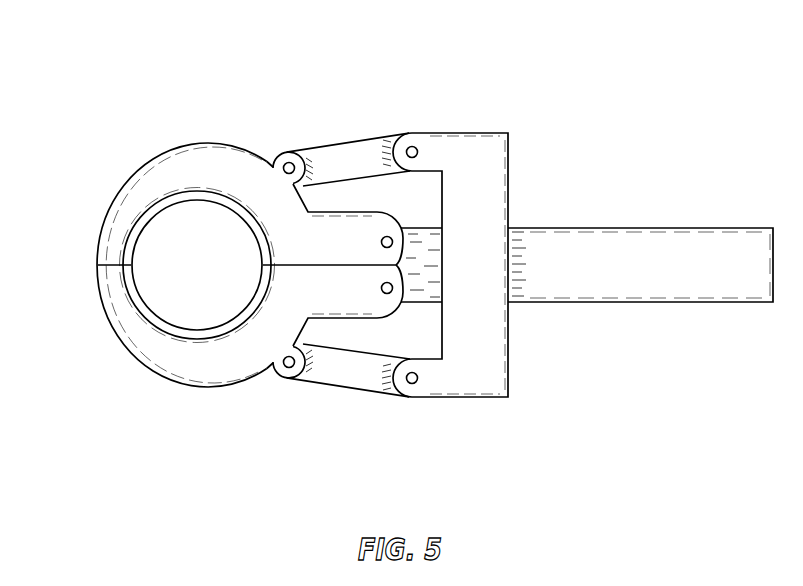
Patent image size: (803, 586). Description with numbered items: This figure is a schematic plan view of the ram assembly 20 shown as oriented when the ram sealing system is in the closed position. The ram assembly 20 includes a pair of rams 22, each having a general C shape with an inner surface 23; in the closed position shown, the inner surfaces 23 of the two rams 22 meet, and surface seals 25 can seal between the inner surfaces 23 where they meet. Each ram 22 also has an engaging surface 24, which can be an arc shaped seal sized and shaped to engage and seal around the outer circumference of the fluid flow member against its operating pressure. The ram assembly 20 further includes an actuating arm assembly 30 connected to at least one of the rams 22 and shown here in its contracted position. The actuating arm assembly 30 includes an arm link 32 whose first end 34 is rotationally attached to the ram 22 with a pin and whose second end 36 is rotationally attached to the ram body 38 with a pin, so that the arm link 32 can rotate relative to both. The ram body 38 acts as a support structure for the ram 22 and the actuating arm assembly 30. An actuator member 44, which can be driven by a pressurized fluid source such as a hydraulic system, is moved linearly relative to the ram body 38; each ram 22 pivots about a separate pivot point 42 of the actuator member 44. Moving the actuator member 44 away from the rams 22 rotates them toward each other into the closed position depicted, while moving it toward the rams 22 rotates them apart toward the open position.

The ram assembly 20 is at (655, 65).
The ram 22 is at (187, 382).
The inner surface 23 is at (110, 263).
The engaging surface 24 is at (223, 205).
The surface seal 25 is at (110, 253).
The actuating arm assembly 30 is at (370, 128).
The arm link 32 is at (348, 141).
The first end 34 is at (286, 141).
The second end 36 is at (409, 411).
The ram body 38 is at (508, 163).
The pivot point 42 is at (381, 288).
The actuator member 44 is at (683, 227).